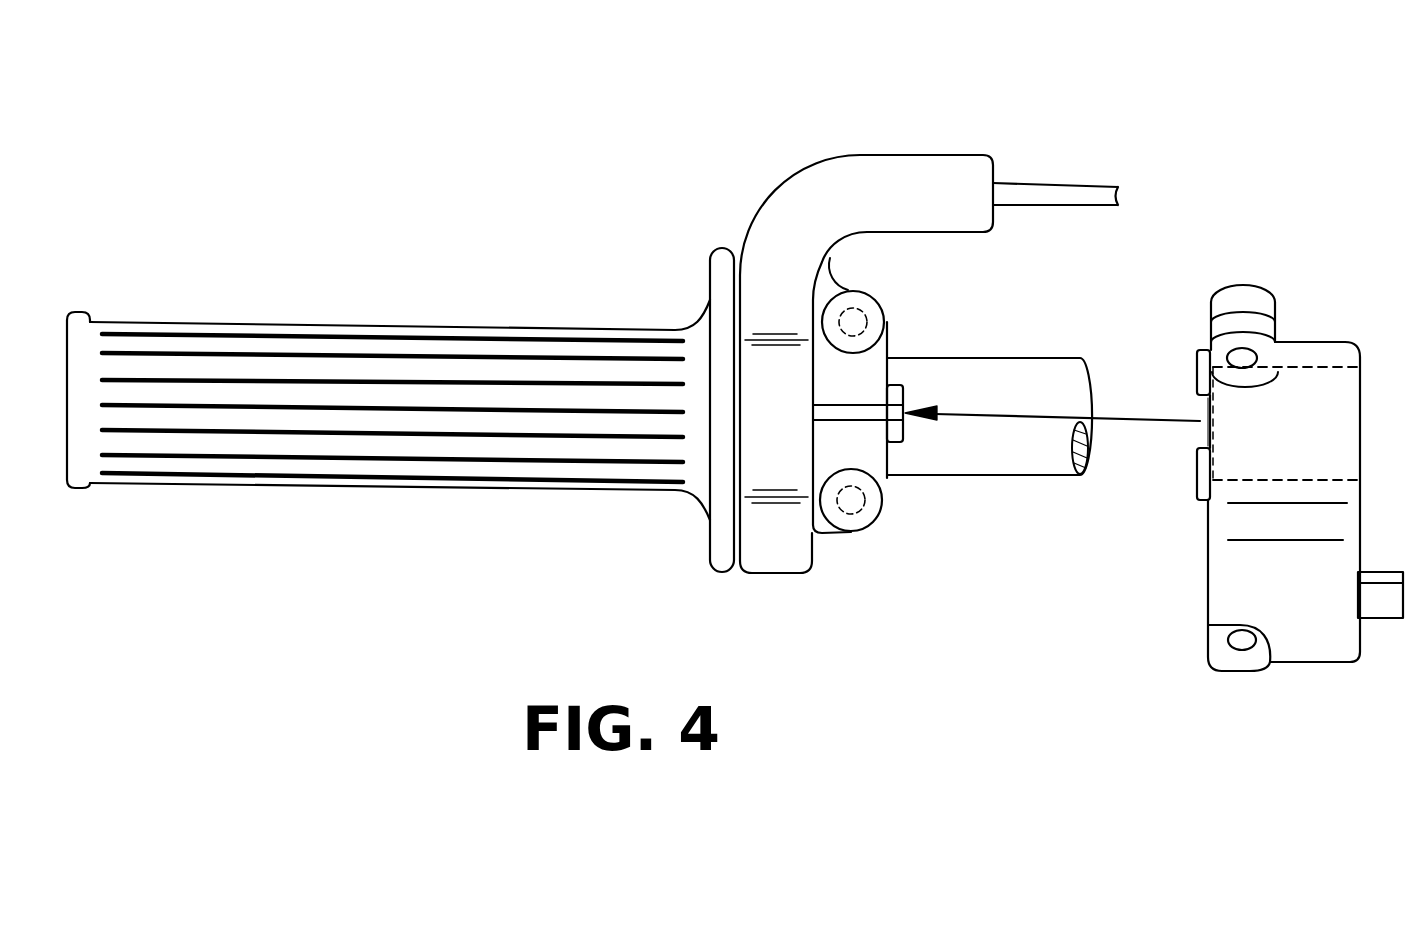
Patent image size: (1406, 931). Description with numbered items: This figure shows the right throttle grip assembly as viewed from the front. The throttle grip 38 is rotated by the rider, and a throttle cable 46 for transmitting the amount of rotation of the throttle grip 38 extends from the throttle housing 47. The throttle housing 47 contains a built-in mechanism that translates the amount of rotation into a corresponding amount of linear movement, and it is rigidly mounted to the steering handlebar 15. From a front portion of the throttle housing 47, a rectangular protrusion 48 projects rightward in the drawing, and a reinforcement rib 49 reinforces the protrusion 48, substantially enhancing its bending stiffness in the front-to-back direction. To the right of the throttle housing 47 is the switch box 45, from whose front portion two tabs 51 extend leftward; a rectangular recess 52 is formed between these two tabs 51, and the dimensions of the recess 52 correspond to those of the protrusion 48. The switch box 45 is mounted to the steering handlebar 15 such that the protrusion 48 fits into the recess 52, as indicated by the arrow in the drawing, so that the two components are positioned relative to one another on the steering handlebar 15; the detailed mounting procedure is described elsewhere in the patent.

The steering handlebar 15 is at (1012, 458).
The throttle grip 38 is at (365, 368).
The switch box 45 is at (1312, 418).
The throttle cable 46 is at (1075, 195).
The throttle housing 47 is at (775, 250).
The protrusion 48 is at (892, 442).
The reinforcement rib 49 is at (847, 412).
The tabs 51 is at (1200, 368).
The recess 52 is at (1208, 433).